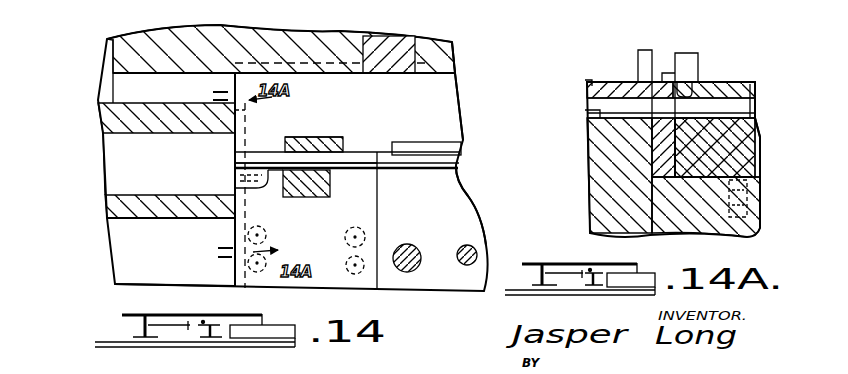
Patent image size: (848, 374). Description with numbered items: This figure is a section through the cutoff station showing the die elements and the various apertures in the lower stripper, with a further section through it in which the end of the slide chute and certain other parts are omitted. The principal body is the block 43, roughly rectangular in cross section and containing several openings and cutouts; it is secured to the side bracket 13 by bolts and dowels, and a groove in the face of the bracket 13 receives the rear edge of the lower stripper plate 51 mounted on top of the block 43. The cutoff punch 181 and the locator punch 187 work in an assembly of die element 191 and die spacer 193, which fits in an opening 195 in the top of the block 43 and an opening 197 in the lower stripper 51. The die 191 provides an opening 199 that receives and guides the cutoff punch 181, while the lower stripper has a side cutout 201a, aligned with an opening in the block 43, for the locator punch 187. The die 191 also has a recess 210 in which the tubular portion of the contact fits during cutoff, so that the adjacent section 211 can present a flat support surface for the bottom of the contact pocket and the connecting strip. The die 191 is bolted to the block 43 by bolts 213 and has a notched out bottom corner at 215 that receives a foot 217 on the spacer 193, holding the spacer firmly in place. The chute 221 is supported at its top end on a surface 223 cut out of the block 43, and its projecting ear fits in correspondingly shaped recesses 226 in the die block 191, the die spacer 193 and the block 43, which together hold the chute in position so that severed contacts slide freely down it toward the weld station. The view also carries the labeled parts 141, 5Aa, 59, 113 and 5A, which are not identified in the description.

In FIG. 14, the side bracket 13 is at (296, 42).
In FIG. 14, the pin 141 is at (398, 44).
In FIG. 14, the locator punch 187 is at (310, 136).
In FIG. 14A, the locator punch 187 is at (649, 50).
In FIG. 14, the side cutout 201a is at (304, 126).
In FIG. 14, the die spacer 193 is at (344, 161).
In FIG. 14A, the die spacer 193 is at (675, 173).
In FIG. 14, the slot 5Aa is at (360, 165).
In FIG. 14A, the slot 5Aa is at (681, 53).
In FIG. 14, the housing edge 59 is at (445, 82).
In FIG. 14, the housing 113 is at (466, 141).
In FIG. 14, the rail 5A is at (460, 163).
In FIG. 14, the lower stripper plate 51 is at (470, 212).
In FIG. 14A, the lower stripper plate 51 is at (586, 84).
In FIG. 14, the chute 221 is at (103, 127).
In FIG. 14, the recess 210 is at (235, 171).
In FIG. 14A, the recess 210 is at (684, 88).
In FIG. 14, the section 211 is at (243, 190).
In FIG. 14, the surface 223 is at (202, 245).
In FIG. 14A, the surface 223 is at (588, 108).
In FIG. 14, the recesses 226 is at (245, 272).
In FIG. 14A, the recesses 226 is at (712, 102).
In FIG. 14, the block 43 is at (128, 266).
In FIG. 14A, the block 43 is at (592, 214).
In FIG. 14, the opening 199 is at (292, 198).
In FIG. 14, the cutoff punch 181 is at (313, 204).
In FIG. 14A, the cutoff punch 181 is at (704, 58).
In FIG. 14, the foot 217 is at (334, 182).
In FIG. 14A, the foot 217 is at (690, 178).
In FIG. 14, the opening 197 is at (372, 210).
In FIG. 14, the bolts 213 is at (340, 236).
In FIG. 14A, the bolts 213 is at (740, 240).
In FIG. 14, the die element 191 is at (338, 284).
In FIG. 14A, the die element 191 is at (761, 137).
In FIG. 14A, the opening 195 is at (648, 142).
In FIG. 14A, the notched out bottom corner 215 is at (683, 147).